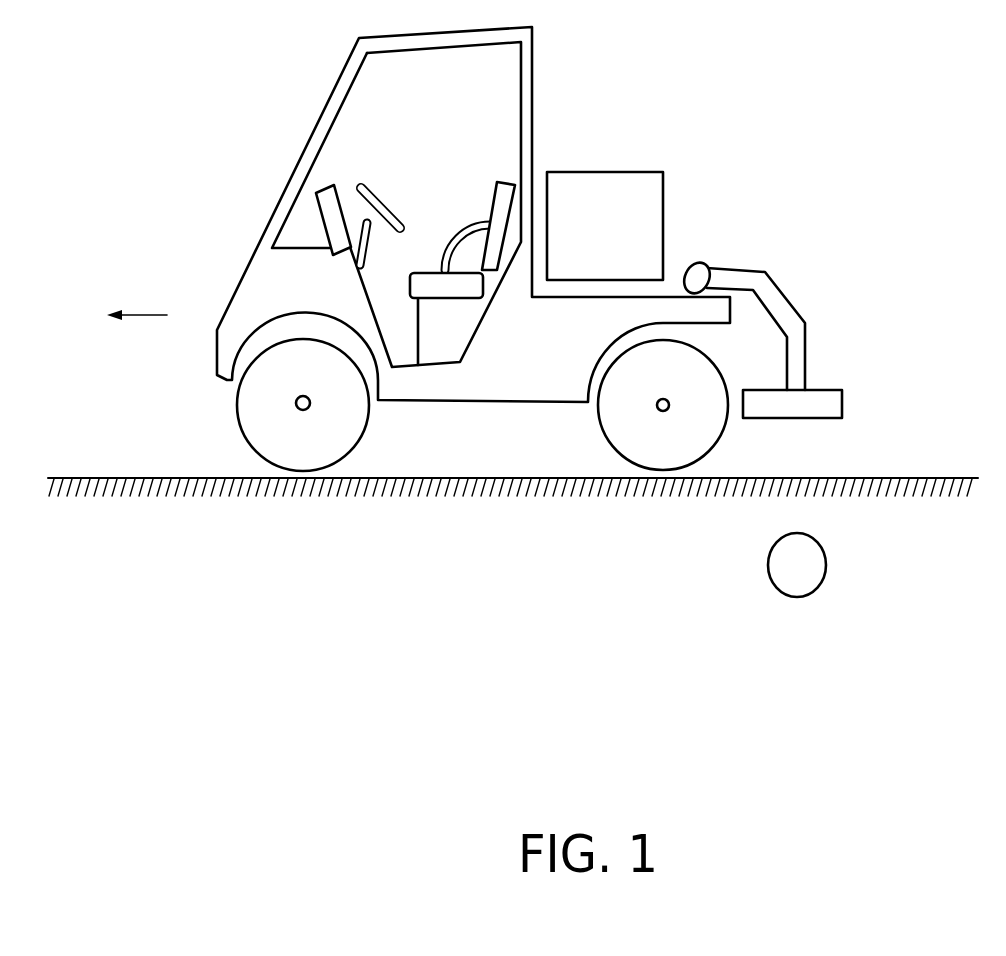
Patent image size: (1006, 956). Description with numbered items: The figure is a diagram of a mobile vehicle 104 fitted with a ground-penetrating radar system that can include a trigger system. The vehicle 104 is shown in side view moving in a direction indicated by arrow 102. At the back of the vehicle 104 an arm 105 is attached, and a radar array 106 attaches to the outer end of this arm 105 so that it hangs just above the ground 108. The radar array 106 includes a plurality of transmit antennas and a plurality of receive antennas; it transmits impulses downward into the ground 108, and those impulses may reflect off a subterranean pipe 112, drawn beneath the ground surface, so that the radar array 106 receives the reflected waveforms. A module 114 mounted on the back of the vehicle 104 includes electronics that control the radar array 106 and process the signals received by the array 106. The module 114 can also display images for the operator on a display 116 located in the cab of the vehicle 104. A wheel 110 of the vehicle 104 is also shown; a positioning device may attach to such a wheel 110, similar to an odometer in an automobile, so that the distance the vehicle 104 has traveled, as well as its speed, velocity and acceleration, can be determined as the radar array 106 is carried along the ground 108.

The arrow 102 is at (137, 330).
The mobile vehicle 104 is at (210, 108).
The arm 105 is at (785, 298).
The radar array 106 is at (842, 403).
The ground 108 is at (963, 478).
The wheel 110 is at (723, 440).
The subterranean pipe 112 is at (790, 598).
The module 114 is at (605, 172).
The display 116 is at (336, 192).